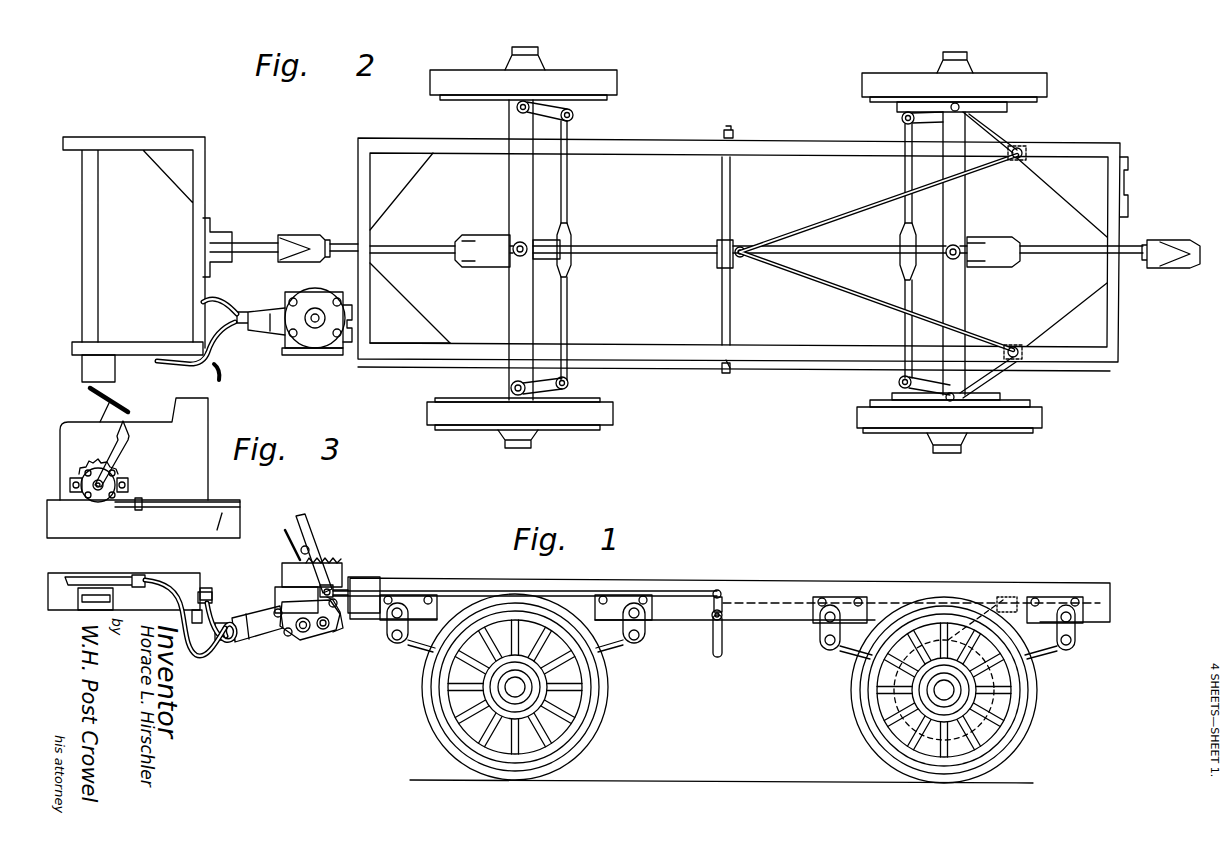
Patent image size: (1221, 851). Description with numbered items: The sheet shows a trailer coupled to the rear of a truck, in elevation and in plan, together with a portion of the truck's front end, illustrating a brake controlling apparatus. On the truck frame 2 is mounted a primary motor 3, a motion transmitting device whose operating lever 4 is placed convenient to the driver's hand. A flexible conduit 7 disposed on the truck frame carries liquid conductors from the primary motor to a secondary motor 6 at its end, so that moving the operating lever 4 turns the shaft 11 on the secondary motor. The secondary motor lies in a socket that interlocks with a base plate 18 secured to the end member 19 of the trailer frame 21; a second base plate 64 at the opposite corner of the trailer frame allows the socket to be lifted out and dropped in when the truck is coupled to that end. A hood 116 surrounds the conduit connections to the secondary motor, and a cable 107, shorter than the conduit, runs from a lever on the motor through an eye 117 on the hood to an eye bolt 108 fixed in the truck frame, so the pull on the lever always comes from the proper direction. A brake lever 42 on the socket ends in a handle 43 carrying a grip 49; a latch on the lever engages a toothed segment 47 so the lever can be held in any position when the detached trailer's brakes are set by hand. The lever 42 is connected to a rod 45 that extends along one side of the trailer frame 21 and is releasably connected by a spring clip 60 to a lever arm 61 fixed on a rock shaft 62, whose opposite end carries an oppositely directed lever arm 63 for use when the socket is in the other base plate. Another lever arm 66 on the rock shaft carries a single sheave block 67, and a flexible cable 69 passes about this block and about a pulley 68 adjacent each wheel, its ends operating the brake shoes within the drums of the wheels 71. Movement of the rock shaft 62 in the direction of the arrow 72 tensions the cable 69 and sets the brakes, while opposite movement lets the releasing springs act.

In FIG. 3, the truck frame 2 is at (92, 527).
In FIG. 3, the primary motor 3 is at (117, 478).
In FIG. 3, the operating lever 4 is at (117, 448).
In FIG. 1, the secondary motor 6 is at (303, 634).
In FIG. 2, the flexible conduit 7 is at (225, 375).
In FIG. 3, the flexible conduit 7 is at (222, 513).
In FIG. 1, the flexible conduit 7 is at (175, 582).
In FIG. 1, the shaft 11 is at (311, 633).
In FIG. 2, the base plate 18 is at (353, 322).
In FIG. 2, the end member 19 is at (358, 281).
In FIG. 2, the trailer frame 21 is at (458, 345).
In FIG. 1, the lever 42 is at (334, 613).
In FIG. 1, the handle 43 is at (303, 521).
In FIG. 2, the rod 45 is at (400, 370).
In FIG. 1, the rod 45 is at (360, 590).
In FIG. 1, the toothed segment 47 is at (331, 564).
In FIG. 1, the grip 49 is at (286, 535).
In FIG. 2, the spring clip 60 is at (724, 373).
In FIG. 2, the lever arm 61 is at (731, 374).
In FIG. 1, the lever arm 61 is at (713, 612).
In FIG. 2, the rock shaft 62 is at (730, 202).
In FIG. 1, the rock shaft 62 is at (712, 630).
In FIG. 2, the lever arm 63 is at (733, 138).
In FIG. 1, the lever arm 63 is at (722, 645).
In FIG. 2, the second base plate 64 is at (1126, 188).
In FIG. 2, the lever arm 66 is at (717, 257).
In FIG. 2, the single sheave block 67 is at (746, 252).
In FIG. 2, the pulley 68 is at (1017, 160).
In FIG. 2, the flexible cable 69 is at (880, 203).
In FIG. 2, the wheels 71 is at (903, 83).
In FIG. 1, the arrow 72 is at (745, 570).
In FIG. 2, the cable 107 is at (258, 300).
In FIG. 2, the eye bolt 108 is at (217, 291).
In FIG. 1, the eye bolt 108 is at (222, 585).
In FIG. 1, the hood 116 is at (260, 643).
In FIG. 2, the eye 117 is at (240, 306).